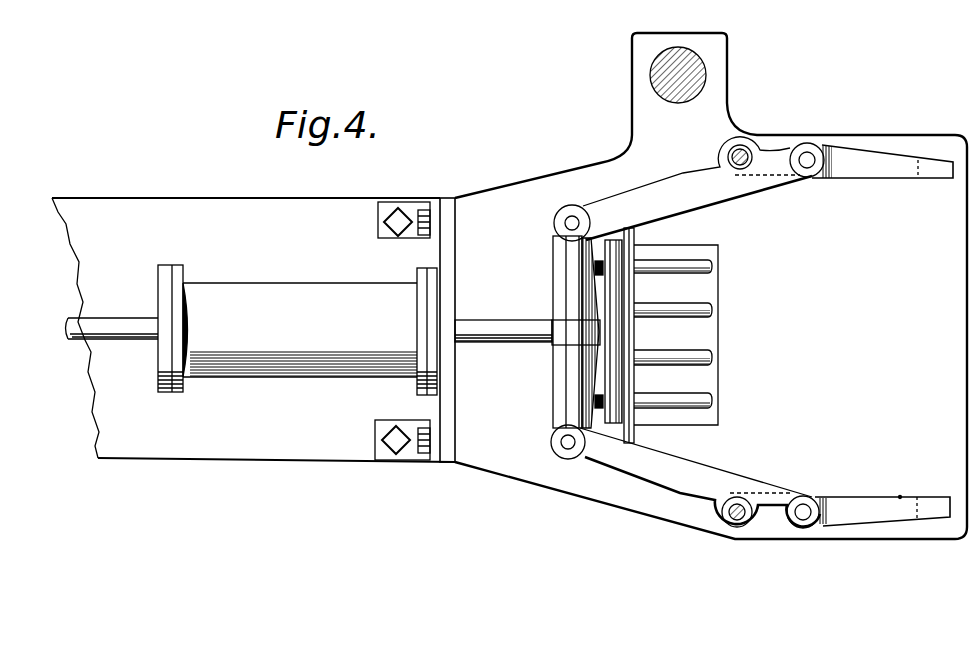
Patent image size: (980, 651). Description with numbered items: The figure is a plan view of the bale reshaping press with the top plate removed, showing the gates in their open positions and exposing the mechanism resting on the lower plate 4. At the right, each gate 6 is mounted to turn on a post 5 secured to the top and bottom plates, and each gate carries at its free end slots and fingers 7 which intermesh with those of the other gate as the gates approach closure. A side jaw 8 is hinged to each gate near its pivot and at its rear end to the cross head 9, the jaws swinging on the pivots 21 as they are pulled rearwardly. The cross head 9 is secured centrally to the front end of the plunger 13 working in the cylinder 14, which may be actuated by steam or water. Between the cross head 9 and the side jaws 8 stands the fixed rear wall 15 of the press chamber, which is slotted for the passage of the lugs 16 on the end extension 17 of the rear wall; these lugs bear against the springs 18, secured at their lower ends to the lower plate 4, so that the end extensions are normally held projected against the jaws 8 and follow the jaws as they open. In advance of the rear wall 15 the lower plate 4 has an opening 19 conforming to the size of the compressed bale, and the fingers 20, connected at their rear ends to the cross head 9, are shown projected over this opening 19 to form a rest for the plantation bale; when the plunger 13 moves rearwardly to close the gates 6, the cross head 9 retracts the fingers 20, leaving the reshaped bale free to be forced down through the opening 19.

The lower plate 4 is at (509, 286).
The post 5 is at (742, 153).
The gate 6 is at (857, 173).
The fingers 7 is at (938, 173).
The side jaw 8 is at (700, 476).
The cross head 9 is at (568, 362).
The plunger 13 is at (472, 325).
The cylinder 14 is at (252, 330).
The rear wall 15 is at (612, 332).
The lugs 16 is at (596, 266).
The end extension 17 is at (634, 237).
The springs 18 is at (580, 290).
The opening 19 is at (710, 332).
The fingers 20 is at (670, 320).
The pivots 21 is at (566, 223).